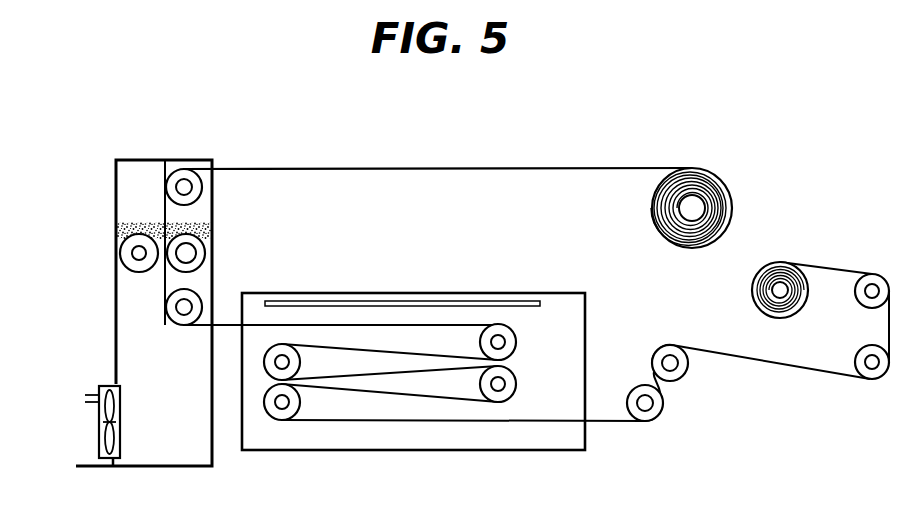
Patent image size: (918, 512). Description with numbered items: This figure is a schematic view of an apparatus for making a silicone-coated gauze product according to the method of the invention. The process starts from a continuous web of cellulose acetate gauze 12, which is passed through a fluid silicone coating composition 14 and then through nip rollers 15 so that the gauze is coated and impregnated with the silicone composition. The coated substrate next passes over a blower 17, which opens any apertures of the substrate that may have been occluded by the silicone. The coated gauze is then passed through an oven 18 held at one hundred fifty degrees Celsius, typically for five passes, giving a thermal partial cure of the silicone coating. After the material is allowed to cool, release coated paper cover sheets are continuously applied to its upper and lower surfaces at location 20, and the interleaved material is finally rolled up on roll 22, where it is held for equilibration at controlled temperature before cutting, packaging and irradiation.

The continuous web of cellulose acetate gauze 12 is at (398, 168).
The fluid silicone coating composition 14 is at (141, 246).
The nip rollers 15 is at (140, 258).
The blower 17 is at (99, 440).
The oven 18 is at (418, 293).
The location 20 is at (770, 367).
The roll 22 is at (781, 262).